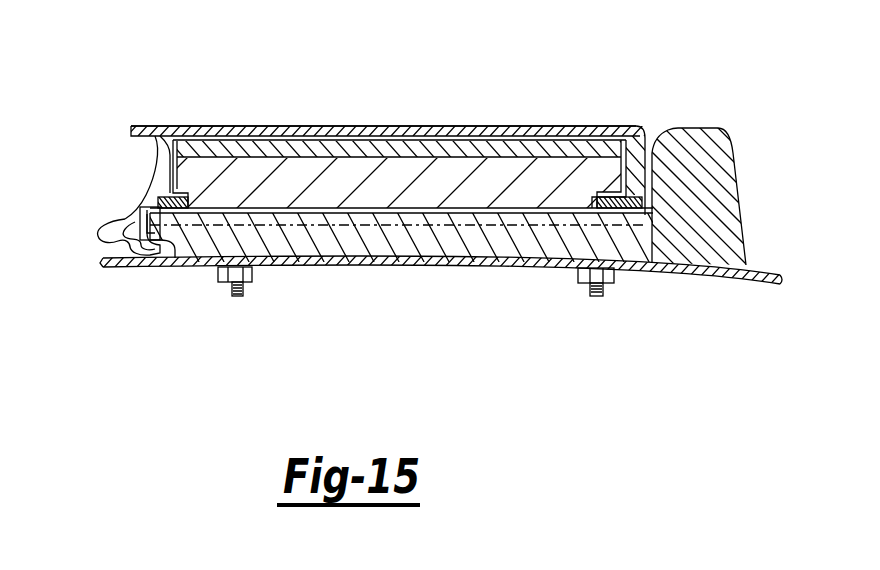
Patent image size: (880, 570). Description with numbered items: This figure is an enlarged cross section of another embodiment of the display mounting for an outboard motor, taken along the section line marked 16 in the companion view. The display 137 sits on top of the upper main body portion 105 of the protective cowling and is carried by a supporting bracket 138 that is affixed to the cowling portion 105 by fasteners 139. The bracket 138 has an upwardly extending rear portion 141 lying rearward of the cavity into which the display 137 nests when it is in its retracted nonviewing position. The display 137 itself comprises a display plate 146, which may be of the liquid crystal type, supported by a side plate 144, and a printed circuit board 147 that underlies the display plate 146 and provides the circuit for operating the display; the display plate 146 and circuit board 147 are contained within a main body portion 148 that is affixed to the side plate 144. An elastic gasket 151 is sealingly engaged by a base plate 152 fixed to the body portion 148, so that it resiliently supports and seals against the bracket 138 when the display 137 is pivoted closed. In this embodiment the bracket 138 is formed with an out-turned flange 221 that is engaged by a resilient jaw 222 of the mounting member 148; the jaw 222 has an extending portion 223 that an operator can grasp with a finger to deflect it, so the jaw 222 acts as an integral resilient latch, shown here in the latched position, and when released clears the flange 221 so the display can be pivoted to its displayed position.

The display 137 is at (215, 126).
The main body portion 148 is at (277, 126).
The printed circuit board 147 is at (373, 145).
The upwardly extending rear portion 141 is at (702, 146).
The base plate 152 is at (655, 206).
The upper main body portion 105 is at (778, 276).
The extending portion 223 is at (101, 222).
The resilient jaw 222 is at (105, 244).
The out-turned flange 221 is at (167, 268).
The elastic gasket 151 is at (203, 262).
The fasteners 139 is at (229, 289).
The side plate 144 is at (388, 198).
The display plate 146 is at (322, 192).
The supporting bracket 138 is at (490, 234).
The section line for FIG. 16 is at (76, 238).